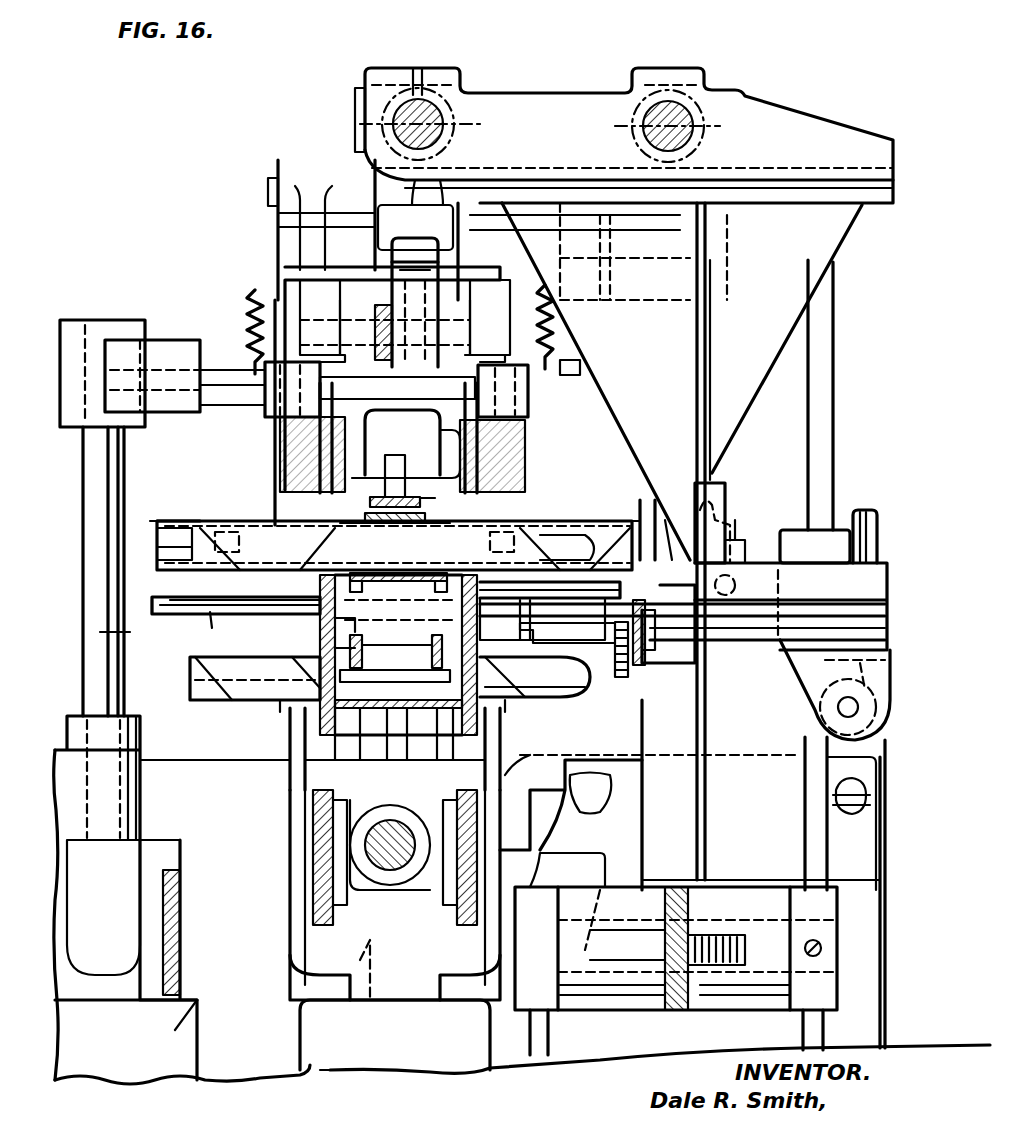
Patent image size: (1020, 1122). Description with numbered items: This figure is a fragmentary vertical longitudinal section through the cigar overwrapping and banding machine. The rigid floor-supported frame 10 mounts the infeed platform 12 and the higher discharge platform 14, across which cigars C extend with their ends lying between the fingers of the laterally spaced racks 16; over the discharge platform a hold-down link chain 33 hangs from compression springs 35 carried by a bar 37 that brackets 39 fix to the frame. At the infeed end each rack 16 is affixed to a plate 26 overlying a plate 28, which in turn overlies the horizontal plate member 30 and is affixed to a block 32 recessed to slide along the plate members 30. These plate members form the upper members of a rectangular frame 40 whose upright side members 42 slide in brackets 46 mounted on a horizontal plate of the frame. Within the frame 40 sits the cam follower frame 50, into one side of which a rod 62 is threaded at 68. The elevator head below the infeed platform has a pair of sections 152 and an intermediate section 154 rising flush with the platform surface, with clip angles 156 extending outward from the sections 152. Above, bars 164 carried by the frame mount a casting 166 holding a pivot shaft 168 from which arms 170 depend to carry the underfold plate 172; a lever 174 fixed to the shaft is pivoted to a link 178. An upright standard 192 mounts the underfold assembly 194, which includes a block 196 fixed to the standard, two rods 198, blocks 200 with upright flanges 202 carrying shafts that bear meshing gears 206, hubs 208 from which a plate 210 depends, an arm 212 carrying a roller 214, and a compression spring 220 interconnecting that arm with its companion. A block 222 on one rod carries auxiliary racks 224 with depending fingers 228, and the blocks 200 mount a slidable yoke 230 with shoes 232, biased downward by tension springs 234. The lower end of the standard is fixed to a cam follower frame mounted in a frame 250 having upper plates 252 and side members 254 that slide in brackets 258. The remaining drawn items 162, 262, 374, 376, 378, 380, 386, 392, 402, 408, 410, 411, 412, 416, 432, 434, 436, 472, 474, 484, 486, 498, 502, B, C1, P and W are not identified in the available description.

The frame 10 is at (248, 1075).
The infeed platform 12 is at (395, 664).
The discharge platform 14 is at (405, 592).
The racks 16 is at (322, 585).
The plate 26 is at (288, 778).
The plate 28 is at (312, 836).
The plate member 30 is at (313, 870).
The block 32 is at (350, 978).
The hold-down link chain 33 is at (360, 525).
The compression springs 35 is at (388, 523).
The bar 37 is at (441, 499).
The brackets 39 is at (406, 444).
The rectangular frame 40 is at (418, 983).
The side members 42 is at (388, 1000).
The brackets 46 is at (330, 1072).
The cam follower frame 50 is at (365, 890).
The rod 62 is at (400, 825).
The threaded connection 68 is at (372, 812).
The sections 152 is at (300, 735).
The section 154 is at (388, 705).
The clip angles 156 is at (278, 702).
The clamp 162 is at (320, 645).
The bars 164 is at (438, 118).
The casting 166 is at (356, 140).
The pivot shaft 168 is at (268, 188).
The arms 170 is at (282, 242).
The underfold plate 172 is at (275, 497).
The lever 174 is at (735, 370).
The link 178 is at (735, 245).
The upright standard 192 is at (105, 632).
The underfold assembly 194 is at (573, 369).
The block 196 is at (72, 318).
The rods 198 is at (218, 375).
The blocks 200 is at (268, 404).
The upright flange 202 is at (520, 300).
The meshing gears 206 is at (385, 322).
The hubs 208 is at (408, 311).
The plate 210 is at (320, 440).
The arm 212 is at (465, 252).
The roller 214 is at (348, 192).
The compression spring 220 is at (415, 227).
The block 222 is at (397, 385).
The auxiliary racks 224 is at (330, 460).
The fingers 228 is at (330, 480).
The yoke 230 is at (300, 282).
The shoes 232 is at (535, 510).
The tension springs 234 is at (250, 300).
The frame 250 is at (118, 860).
The plates 252 is at (172, 905).
The side members 254 is at (148, 880).
The brackets 258 is at (200, 1005).
The plate 262 is at (397, 385).
The block 374 is at (712, 488).
The slide 376 is at (819, 572).
The pin 378 is at (760, 565).
The link 380 is at (655, 520).
The bar 386 is at (856, 605).
The post 392 is at (858, 508).
The shaft 402 is at (682, 637).
The collar 408 is at (600, 652).
The rod 410 is at (535, 628).
The arrow 411 is at (204, 592).
The pin 412 is at (212, 628).
The plate 416 is at (262, 598).
The arm 432 is at (820, 660).
The pivot 434 is at (838, 708).
The bracket 436 is at (855, 665).
The link 472 is at (650, 530).
The lever 474 is at (662, 668).
The piston 484 is at (680, 888).
The cylinder 486 is at (600, 882).
The insert 498 is at (396, 651).
The pin 502 is at (335, 628).
The cam B is at (567, 546).
The cigar C is at (190, 546).
The platen C1 is at (195, 674).
The part P is at (178, 520).
The work W is at (578, 598).